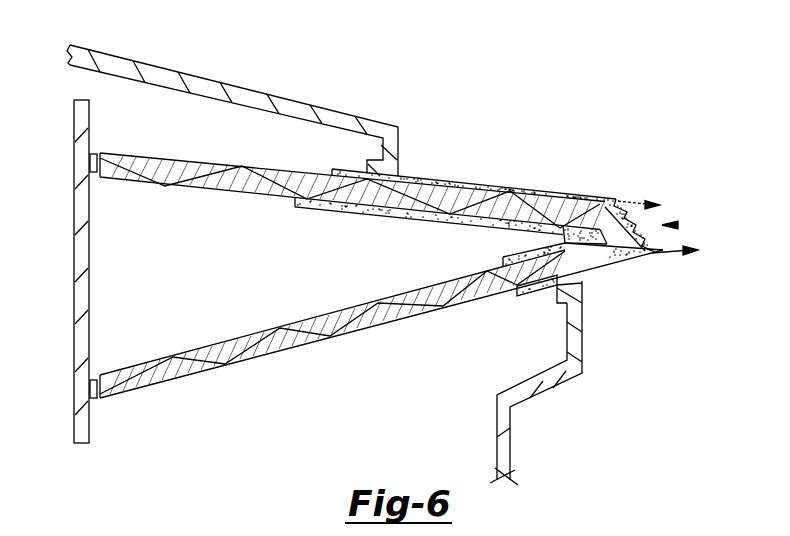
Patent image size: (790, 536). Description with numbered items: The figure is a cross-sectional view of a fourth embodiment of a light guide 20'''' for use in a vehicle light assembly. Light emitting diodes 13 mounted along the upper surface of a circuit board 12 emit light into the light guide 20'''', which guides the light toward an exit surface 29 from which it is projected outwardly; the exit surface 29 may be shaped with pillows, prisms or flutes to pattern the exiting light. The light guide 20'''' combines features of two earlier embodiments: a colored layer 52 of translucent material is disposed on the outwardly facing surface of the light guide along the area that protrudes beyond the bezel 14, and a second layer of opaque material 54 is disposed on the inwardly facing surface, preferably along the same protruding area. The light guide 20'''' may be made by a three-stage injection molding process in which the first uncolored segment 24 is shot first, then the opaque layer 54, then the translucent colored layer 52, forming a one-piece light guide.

The circuit board 12 is at (74, 290).
The light emitting diodes 13 is at (97, 172).
The bezel 14 is at (315, 106).
The light guide 20'''' is at (381, 282).
The first uncolored segment 24 is at (320, 340).
The exit surface 29 is at (677, 225).
The colored layer of translucent material 52 is at (427, 177).
The layer of opaque material 54 is at (310, 208).